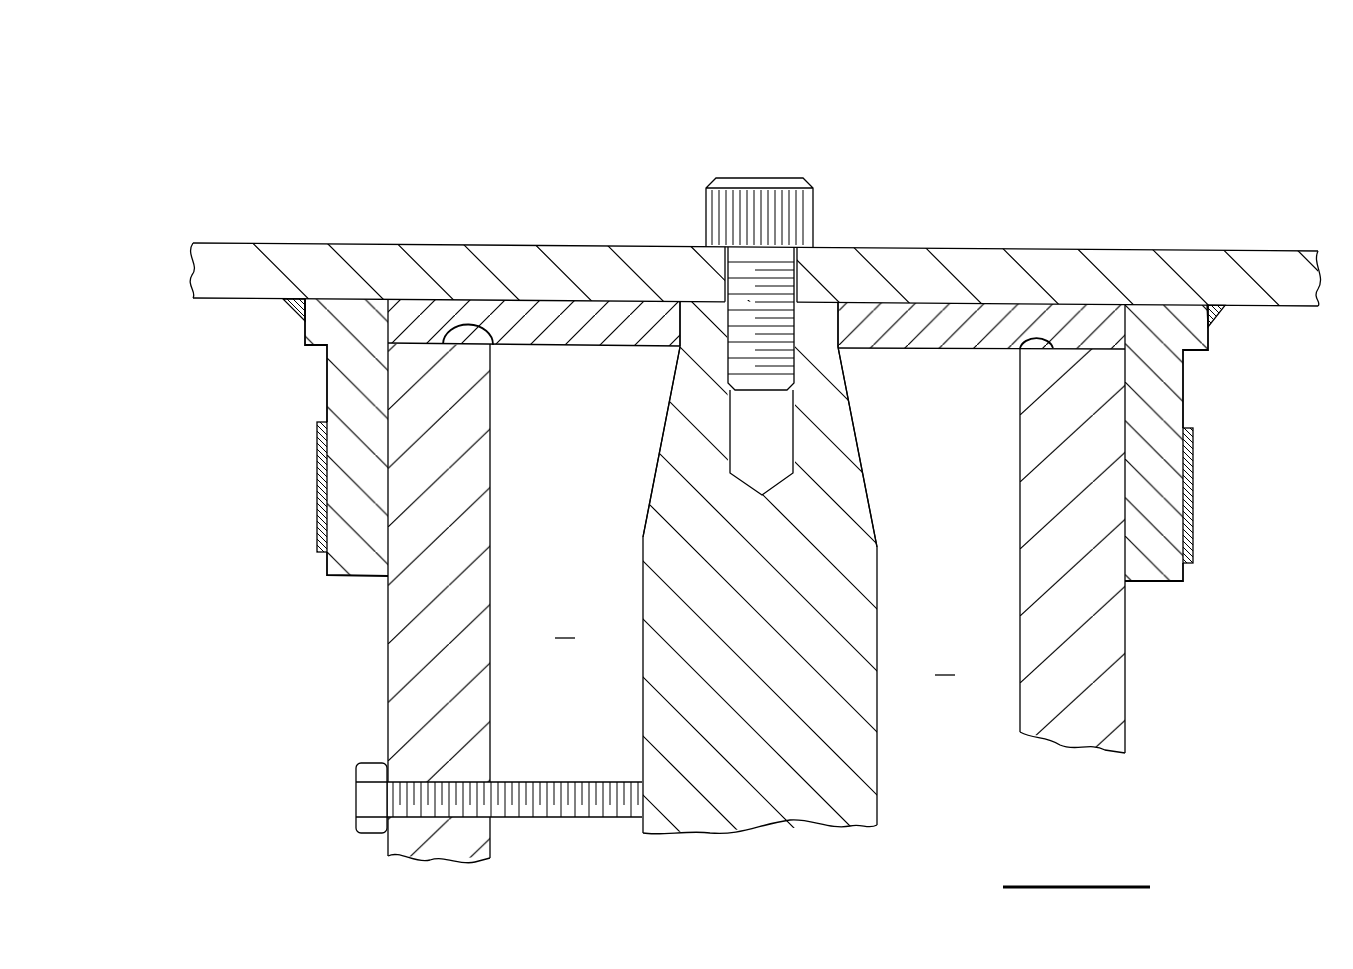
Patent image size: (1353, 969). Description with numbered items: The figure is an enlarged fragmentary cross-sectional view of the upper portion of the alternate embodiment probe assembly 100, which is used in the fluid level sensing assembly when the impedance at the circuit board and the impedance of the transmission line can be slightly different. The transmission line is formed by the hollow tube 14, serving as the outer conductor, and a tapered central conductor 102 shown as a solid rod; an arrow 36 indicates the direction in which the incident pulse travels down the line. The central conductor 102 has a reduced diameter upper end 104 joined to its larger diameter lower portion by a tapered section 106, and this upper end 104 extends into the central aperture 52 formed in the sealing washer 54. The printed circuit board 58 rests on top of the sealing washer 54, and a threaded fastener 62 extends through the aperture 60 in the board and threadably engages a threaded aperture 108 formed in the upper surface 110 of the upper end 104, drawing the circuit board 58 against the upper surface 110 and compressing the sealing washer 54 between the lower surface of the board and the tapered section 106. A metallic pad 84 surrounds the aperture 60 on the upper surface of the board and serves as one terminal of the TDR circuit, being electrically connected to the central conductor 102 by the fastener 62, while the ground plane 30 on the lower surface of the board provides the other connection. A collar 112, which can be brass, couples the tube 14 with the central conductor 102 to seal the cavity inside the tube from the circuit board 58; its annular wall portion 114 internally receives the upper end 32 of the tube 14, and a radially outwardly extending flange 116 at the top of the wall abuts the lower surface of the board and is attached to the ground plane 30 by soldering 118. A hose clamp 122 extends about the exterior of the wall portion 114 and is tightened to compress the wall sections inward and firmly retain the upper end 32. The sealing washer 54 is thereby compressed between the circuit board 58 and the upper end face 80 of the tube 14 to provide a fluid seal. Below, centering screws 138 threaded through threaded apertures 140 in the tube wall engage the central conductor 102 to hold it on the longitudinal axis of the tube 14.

The probe assembly 100 is at (1188, 171).
The printed circuit board 58 is at (759, 253).
The ground plane 30 is at (198, 301).
The upper surface 110 is at (697, 301).
The arrow 36 is at (875, 302).
The threaded fastener 62 is at (781, 241).
The metallic pad 84 is at (704, 244).
The aperture 60 is at (795, 258).
The tapered central conductor 102 is at (761, 560).
The threaded aperture 108 is at (790, 380).
The central aperture 52 is at (690, 350).
The tapered section 106 is at (862, 455).
The upper end 104 is at (840, 322).
The sealing washer 54 is at (756, 383).
The upper end face 80 is at (493, 345).
The tube 14 is at (779, 580).
The upper end 32 is at (489, 467).
The collar 112 is at (748, 476).
The flange 116 is at (305, 330).
The annular wall portion 114 is at (345, 575).
The soldering 118 is at (283, 303).
The hose clamp 122 is at (317, 487).
The threaded apertures 140 is at (452, 790).
The centering screws 138 is at (356, 768).